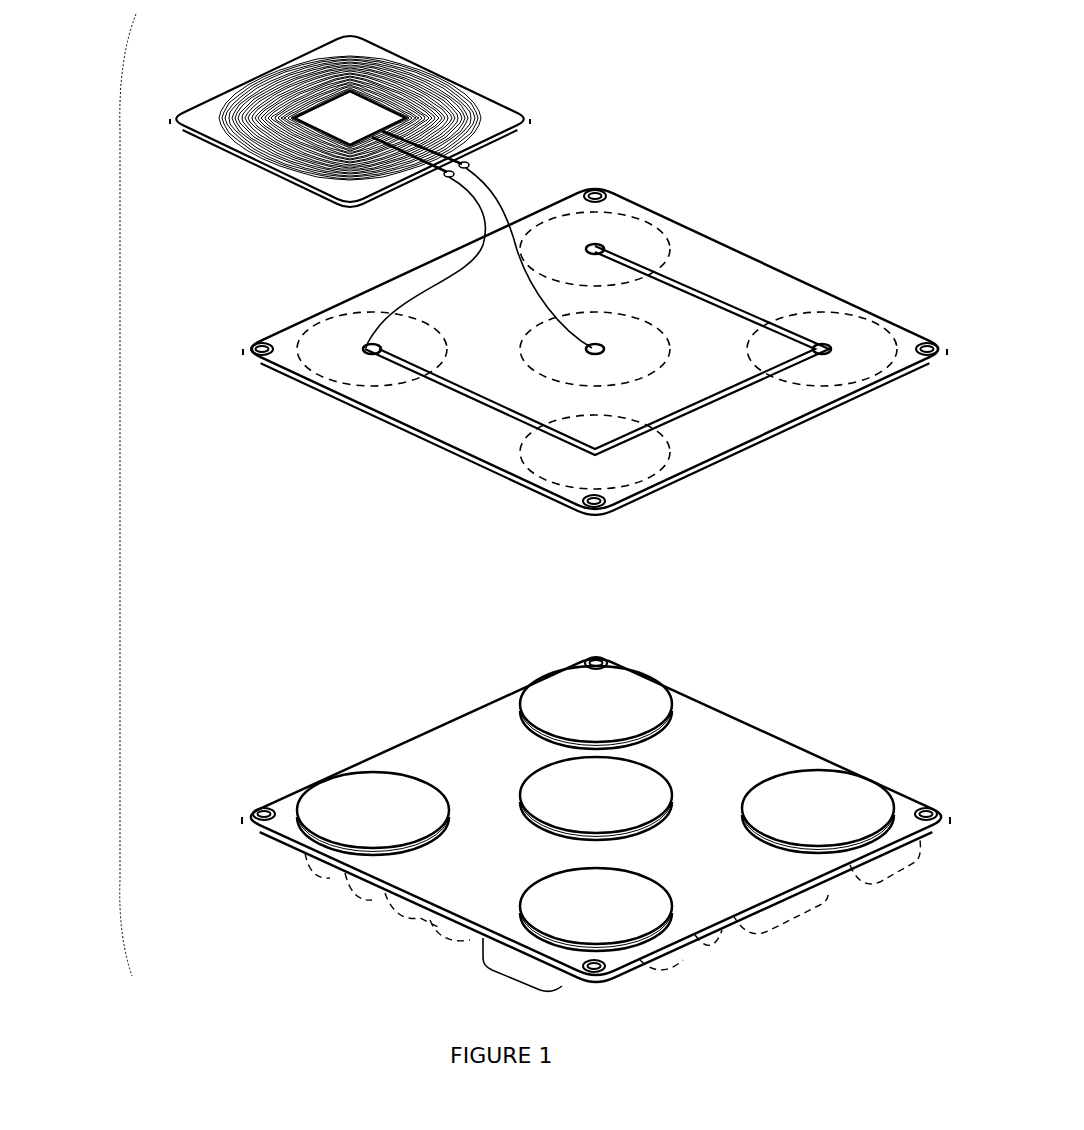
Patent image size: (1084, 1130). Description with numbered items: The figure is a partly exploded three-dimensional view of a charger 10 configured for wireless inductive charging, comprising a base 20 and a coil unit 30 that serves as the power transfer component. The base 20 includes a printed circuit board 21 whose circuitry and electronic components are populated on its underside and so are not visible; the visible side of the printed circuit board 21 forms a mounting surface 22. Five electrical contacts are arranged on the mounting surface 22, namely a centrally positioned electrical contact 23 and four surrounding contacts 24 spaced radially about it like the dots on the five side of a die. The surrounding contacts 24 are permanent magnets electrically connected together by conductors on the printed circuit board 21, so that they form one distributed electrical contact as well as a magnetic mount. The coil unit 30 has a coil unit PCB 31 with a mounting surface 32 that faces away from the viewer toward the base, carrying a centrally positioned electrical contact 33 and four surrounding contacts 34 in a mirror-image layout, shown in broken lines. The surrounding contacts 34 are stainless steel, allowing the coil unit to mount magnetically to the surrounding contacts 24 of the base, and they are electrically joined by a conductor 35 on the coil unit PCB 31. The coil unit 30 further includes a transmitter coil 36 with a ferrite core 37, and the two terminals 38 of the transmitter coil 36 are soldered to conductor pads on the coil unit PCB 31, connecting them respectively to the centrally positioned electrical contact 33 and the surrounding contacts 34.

The charger 10 is at (119, 497).
The base 20 is at (294, 729).
The printed circuit board 21 is at (425, 722).
The mounting surface 22 is at (493, 824).
The centrally positioned electrical contact 23 is at (550, 778).
The surrounding contacts 24 is at (655, 702).
The coil unit 30 is at (253, 66).
The coil unit PCB 31 is at (307, 313).
The mounting surface 32 is at (499, 346).
The centrally positioned electrical contact 33 is at (630, 358).
The surrounding contacts 34 is at (663, 243).
The conductor 35 is at (633, 257).
The transmitter coil 36 is at (413, 83).
The ferrite core 37 is at (505, 118).
The terminals 38 is at (527, 275).